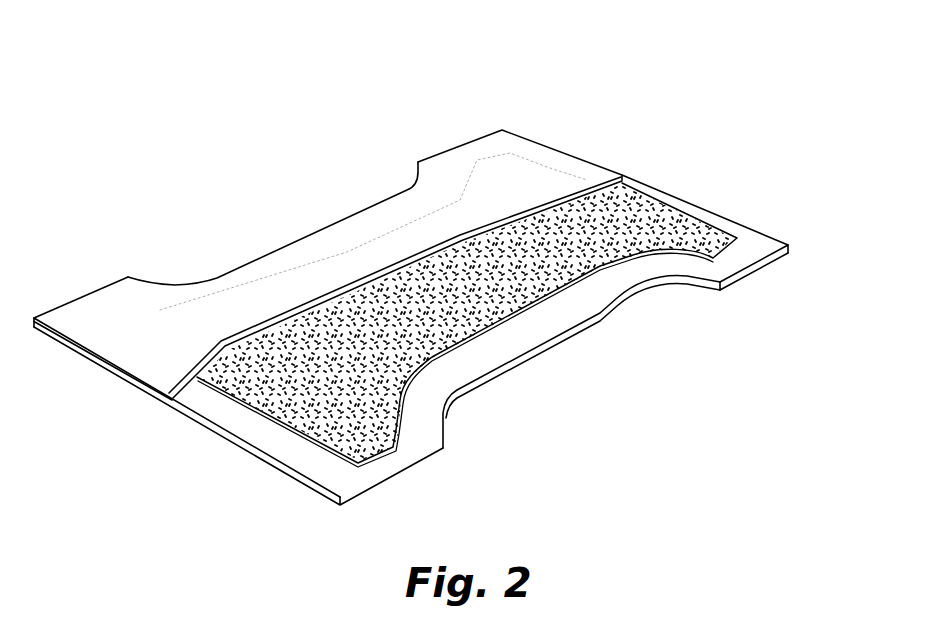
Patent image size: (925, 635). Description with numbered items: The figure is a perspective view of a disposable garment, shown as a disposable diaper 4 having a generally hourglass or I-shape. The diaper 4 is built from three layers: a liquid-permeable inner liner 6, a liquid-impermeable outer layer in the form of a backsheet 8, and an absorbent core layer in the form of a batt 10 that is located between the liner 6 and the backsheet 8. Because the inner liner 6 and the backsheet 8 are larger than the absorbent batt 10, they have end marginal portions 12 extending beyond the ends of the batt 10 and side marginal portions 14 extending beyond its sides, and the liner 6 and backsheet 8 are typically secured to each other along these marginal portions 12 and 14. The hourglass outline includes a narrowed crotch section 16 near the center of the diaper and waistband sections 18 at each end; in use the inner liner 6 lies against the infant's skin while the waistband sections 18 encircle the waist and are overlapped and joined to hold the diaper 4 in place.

The disposable diaper 4 is at (258, 114).
The inner liner 6 is at (513, 170).
The backsheet 8 is at (292, 437).
The batt 10 is at (660, 228).
The end marginal portions 12 is at (117, 378).
The side marginal portions 14 is at (178, 283).
The crotch section 16 is at (565, 343).
The waistband sections 18 is at (210, 405).